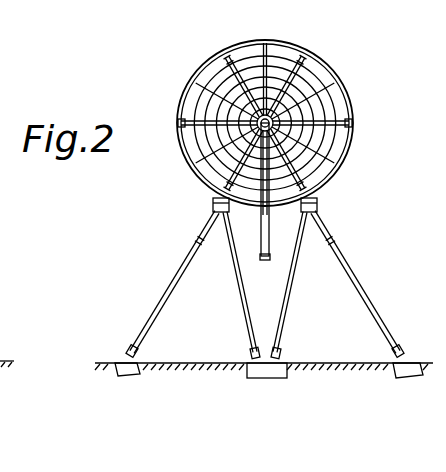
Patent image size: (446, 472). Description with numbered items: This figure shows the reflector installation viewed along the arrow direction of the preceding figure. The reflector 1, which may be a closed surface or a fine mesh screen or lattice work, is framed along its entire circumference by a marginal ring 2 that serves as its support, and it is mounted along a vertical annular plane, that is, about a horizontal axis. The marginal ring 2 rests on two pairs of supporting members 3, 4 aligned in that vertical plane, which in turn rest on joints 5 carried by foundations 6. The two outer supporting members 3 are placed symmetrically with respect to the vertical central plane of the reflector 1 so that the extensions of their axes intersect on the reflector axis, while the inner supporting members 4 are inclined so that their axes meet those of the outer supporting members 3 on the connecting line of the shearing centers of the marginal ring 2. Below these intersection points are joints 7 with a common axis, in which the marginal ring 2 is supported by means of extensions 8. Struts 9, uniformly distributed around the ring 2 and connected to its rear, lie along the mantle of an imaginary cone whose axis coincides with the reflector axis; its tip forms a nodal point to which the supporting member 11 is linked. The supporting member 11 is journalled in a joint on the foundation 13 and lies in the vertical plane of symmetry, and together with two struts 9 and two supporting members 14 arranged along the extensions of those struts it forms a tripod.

The reflector 1 is at (312, 74).
The marginal ring 2 is at (352, 113).
The outer supporting members 3 is at (163, 298).
The inner supporting members 4 is at (236, 278).
The joints 5 is at (126, 348).
The foundations 6 is at (264, 379).
The joints 7 is at (262, 214).
The extensions 8 is at (213, 204).
The struts 9 is at (280, 52).
The supporting member 11 is at (266, 261).
The foundation 13 is at (9, 377).
The supporting members 14 is at (199, 240).